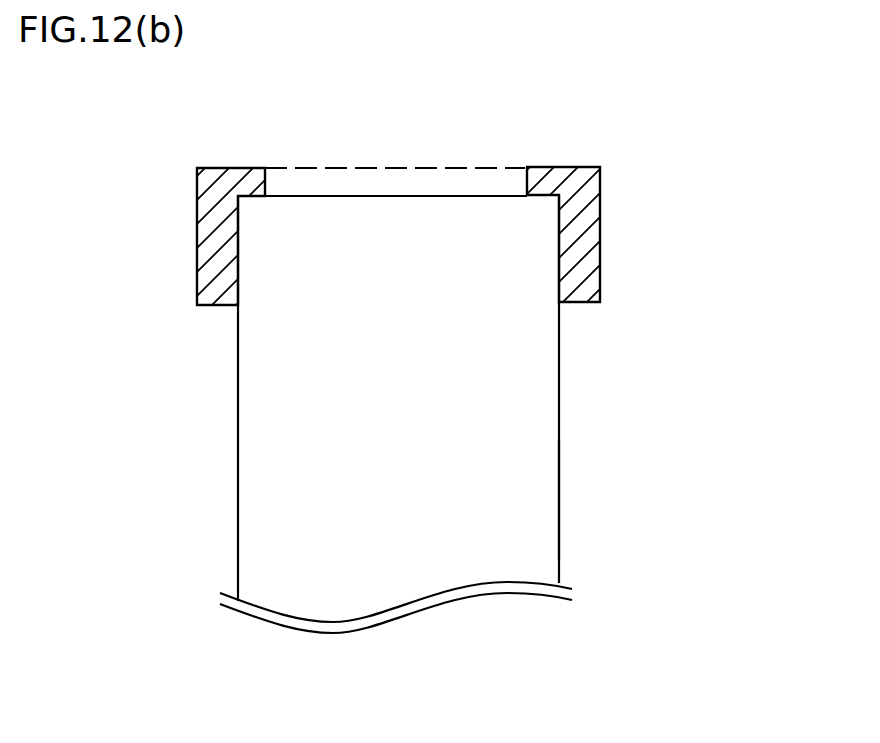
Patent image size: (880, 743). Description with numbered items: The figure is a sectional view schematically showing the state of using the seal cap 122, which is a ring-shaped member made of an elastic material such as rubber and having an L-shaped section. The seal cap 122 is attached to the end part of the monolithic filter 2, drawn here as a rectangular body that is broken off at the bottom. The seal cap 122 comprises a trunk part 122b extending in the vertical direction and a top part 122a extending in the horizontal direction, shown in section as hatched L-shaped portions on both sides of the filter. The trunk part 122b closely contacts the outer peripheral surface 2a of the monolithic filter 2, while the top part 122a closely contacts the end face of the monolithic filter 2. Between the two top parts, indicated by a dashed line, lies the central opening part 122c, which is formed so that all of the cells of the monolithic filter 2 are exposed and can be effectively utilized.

The monolithic filter 2 is at (533, 409).
The outer peripheral surface 2a is at (566, 508).
The seal cap 122 is at (555, 165).
The top part 122a is at (640, 160).
The trunk part 122b is at (641, 198).
The central opening part 122c is at (366, 152).